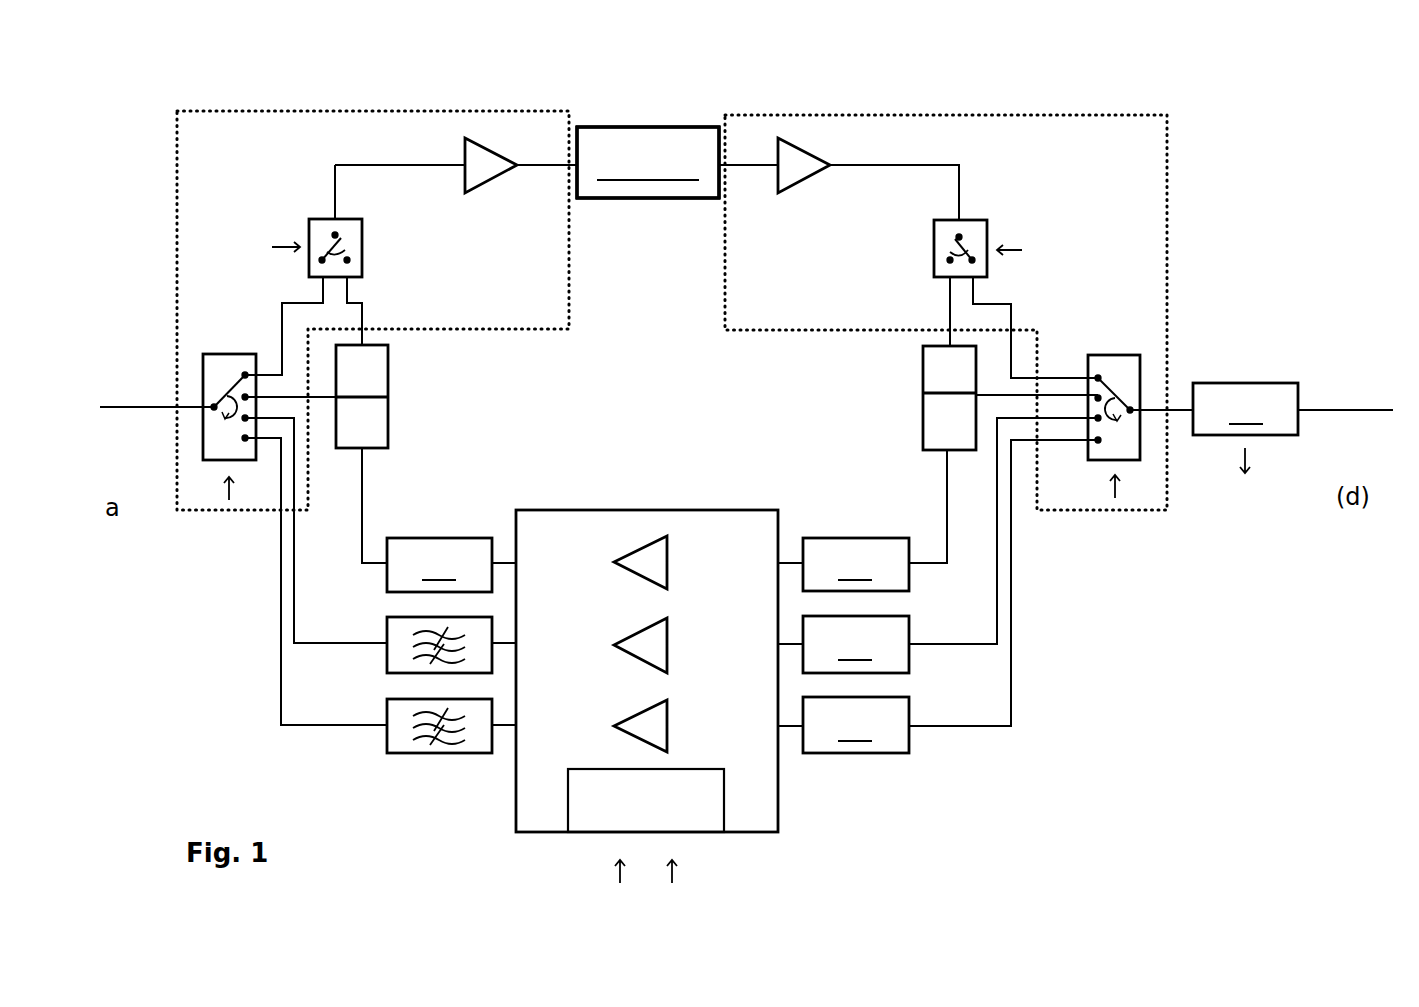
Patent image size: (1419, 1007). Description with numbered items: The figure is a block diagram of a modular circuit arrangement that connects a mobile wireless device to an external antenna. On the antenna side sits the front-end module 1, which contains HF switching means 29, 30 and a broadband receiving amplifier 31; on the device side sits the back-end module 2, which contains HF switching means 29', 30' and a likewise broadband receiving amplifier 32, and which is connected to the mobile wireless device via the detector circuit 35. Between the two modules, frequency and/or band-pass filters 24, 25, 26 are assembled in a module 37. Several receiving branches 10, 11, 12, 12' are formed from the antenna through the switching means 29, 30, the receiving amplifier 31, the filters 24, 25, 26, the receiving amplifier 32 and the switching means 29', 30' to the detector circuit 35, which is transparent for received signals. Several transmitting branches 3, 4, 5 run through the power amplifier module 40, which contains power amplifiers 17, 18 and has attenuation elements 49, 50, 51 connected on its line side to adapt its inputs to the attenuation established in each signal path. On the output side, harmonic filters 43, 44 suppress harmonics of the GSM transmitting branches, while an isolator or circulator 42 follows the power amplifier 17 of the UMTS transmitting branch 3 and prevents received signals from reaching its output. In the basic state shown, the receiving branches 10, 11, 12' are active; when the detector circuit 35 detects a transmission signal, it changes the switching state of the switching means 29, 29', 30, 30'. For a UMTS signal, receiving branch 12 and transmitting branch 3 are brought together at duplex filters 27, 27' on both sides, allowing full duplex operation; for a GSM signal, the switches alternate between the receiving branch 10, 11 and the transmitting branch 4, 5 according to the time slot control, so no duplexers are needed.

The front-end module 1 is at (239, 167).
The back-end module 2 is at (1104, 168).
The UMTS transmitting branch 3 is at (946, 522).
The transmitting branch 4 is at (995, 615).
The transmitting branch 5 is at (1011, 689).
The receiving branch 10 is at (280, 320).
The receiving branch 11 is at (548, 163).
The receiving branch 12 is at (394, 293).
The receiving branch 12' is at (411, 270).
The power amplifier 17 is at (651, 560).
The power amplifier 18 is at (651, 650).
The frequency and/or band-pass filter 24 is at (648, 162).
The frequency and/or band-pass filter 25 is at (648, 162).
The frequency and/or band-pass filter 26 is at (648, 162).
The duplex filter 27 is at (370, 396).
The duplex filter 27' is at (965, 363).
The HF switching means 29 is at (178, 392).
The HF switching means 29' is at (1108, 373).
The HF switching means 30 is at (313, 160).
The HF switching means 30' is at (1004, 162).
The broadband receiving amplifier 31 is at (475, 160).
The receiving amplifier 32 is at (793, 163).
The detector circuit 35 is at (1261, 428).
The module 37 is at (637, 127).
The power amplifier module 40 is at (562, 510).
The isolator or circulator 42 is at (439, 520).
The harmonic filter 43 is at (385, 655).
The harmonic filter 44 is at (385, 736).
The attenuation element 49 is at (843, 564).
The attenuation element 50 is at (843, 644).
The attenuation element 51 is at (843, 725).